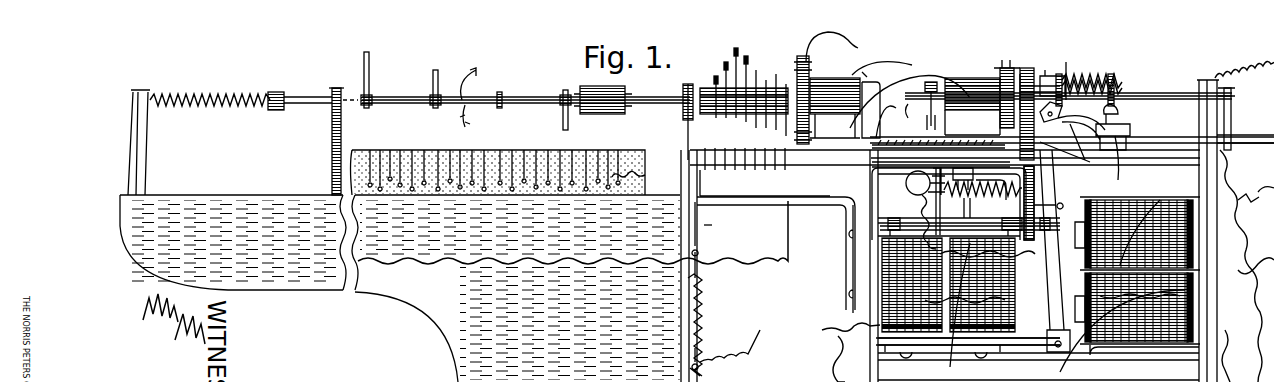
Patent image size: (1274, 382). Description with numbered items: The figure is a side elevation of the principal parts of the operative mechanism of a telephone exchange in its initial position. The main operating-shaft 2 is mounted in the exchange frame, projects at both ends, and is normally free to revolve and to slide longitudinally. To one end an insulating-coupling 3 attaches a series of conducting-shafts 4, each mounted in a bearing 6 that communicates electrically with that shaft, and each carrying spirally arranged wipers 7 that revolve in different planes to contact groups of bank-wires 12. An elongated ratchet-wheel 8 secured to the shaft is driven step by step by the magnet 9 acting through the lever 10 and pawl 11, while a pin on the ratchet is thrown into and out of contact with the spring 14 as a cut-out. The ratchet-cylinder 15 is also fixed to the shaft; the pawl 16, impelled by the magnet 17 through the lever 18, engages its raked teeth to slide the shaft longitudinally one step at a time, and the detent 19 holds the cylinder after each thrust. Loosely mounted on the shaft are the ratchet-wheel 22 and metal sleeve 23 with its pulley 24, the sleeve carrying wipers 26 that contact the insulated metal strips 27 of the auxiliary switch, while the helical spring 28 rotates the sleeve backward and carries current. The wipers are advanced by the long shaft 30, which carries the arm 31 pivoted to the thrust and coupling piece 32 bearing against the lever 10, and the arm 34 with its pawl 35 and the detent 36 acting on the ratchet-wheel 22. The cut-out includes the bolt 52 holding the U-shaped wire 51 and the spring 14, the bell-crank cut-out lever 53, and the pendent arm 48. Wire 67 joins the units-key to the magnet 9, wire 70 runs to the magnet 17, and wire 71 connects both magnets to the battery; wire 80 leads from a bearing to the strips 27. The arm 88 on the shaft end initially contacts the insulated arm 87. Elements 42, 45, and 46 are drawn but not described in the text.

The main operating-shaft 2 is at (240, 108).
The insulating-coupling 3 is at (605, 88).
The conducting-shafts 4 is at (510, 96).
The bearing 6 is at (332, 122).
The wipers 7 is at (428, 82).
The elongated ratchet-wheel 8 is at (872, 44).
The magnet 9 is at (996, 300).
The lever 10 is at (1026, 210).
The pawl 11 is at (990, 78).
The wires 12 is at (410, 138).
The spring 14 is at (932, 82).
The ratchet-cylinder 15 is at (1085, 80).
The pawl 16 is at (1058, 86).
The magnet 17 is at (1160, 200).
The lever 18 is at (1058, 274).
The detent 19 is at (1118, 150).
The ratchet-wheel 22 is at (824, 76).
The metal sleeve 23 is at (760, 86).
The pulley 24 is at (690, 84).
The wipers 26 is at (716, 76).
The metal strips 27 is at (720, 148).
The helical spring 28 is at (734, 208).
The long shaft 30 is at (852, 202).
The arm 31 is at (1030, 110).
The thrust and coupling piece 32 is at (1006, 66).
The arm 34 is at (800, 100).
The pawl 35 is at (865, 80).
The detent 36 is at (895, 85).
The stop 42 is at (1068, 64).
The rack bar 45 is at (995, 138).
The bar 46 is at (910, 142).
The pendent arm 48 is at (950, 360).
The U-shaped wire 51 is at (920, 200).
The bolt 52 is at (918, 172).
The bell-crank cut-out lever 53 is at (978, 196).
The wire 67 is at (1273, 186).
The wire 70 is at (1258, 62).
The wire 71 is at (826, 332).
The wire 80 is at (520, 260).
The insulated arm 87 is at (668, 150).
The arm 88 is at (1231, 112).